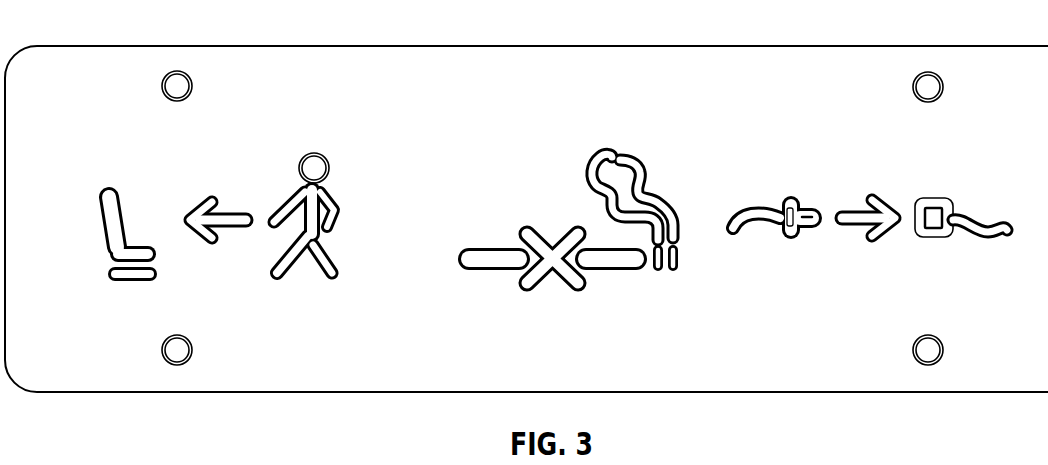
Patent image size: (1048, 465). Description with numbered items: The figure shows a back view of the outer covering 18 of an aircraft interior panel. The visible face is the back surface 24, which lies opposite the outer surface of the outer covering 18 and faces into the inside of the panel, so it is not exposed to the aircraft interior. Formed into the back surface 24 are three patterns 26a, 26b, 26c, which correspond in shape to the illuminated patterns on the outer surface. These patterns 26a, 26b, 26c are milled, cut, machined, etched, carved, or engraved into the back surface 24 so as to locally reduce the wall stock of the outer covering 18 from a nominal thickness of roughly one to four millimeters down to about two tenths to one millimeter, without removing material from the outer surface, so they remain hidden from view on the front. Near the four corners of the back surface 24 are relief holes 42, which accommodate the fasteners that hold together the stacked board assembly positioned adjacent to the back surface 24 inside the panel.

The outer covering 18 is at (526, 199).
The back surface 24 is at (660, 77).
The pattern 26a is at (866, 190).
The pattern 26b is at (556, 151).
The pattern 26c is at (209, 178).
The relief holes 42 is at (163, 88).